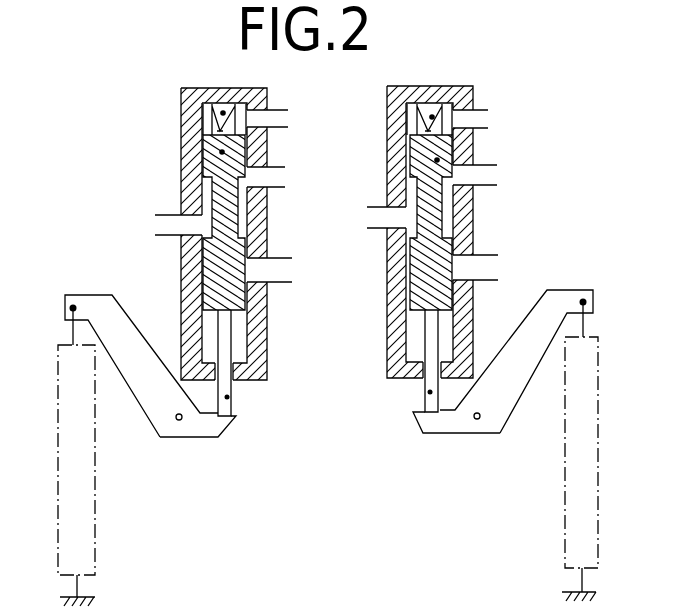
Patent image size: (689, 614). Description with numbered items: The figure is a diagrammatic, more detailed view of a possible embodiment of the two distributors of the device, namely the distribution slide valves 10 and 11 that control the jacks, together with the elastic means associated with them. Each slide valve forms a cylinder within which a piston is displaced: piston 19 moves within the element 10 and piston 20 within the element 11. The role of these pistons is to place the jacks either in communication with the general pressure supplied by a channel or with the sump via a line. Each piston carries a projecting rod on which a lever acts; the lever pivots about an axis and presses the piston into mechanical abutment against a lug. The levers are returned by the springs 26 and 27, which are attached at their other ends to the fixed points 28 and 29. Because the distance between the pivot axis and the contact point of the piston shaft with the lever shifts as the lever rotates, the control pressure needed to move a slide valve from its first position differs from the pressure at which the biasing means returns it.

The distribution slide valve 10 is at (190, 92).
The distribution slide valve 11 is at (467, 95).
The piston 19 is at (222, 152).
The piston 20 is at (437, 160).
The spring 26 is at (87, 488).
The spring 27 is at (563, 418).
The fixed point 28 is at (85, 595).
The fixed point 29 is at (570, 588).